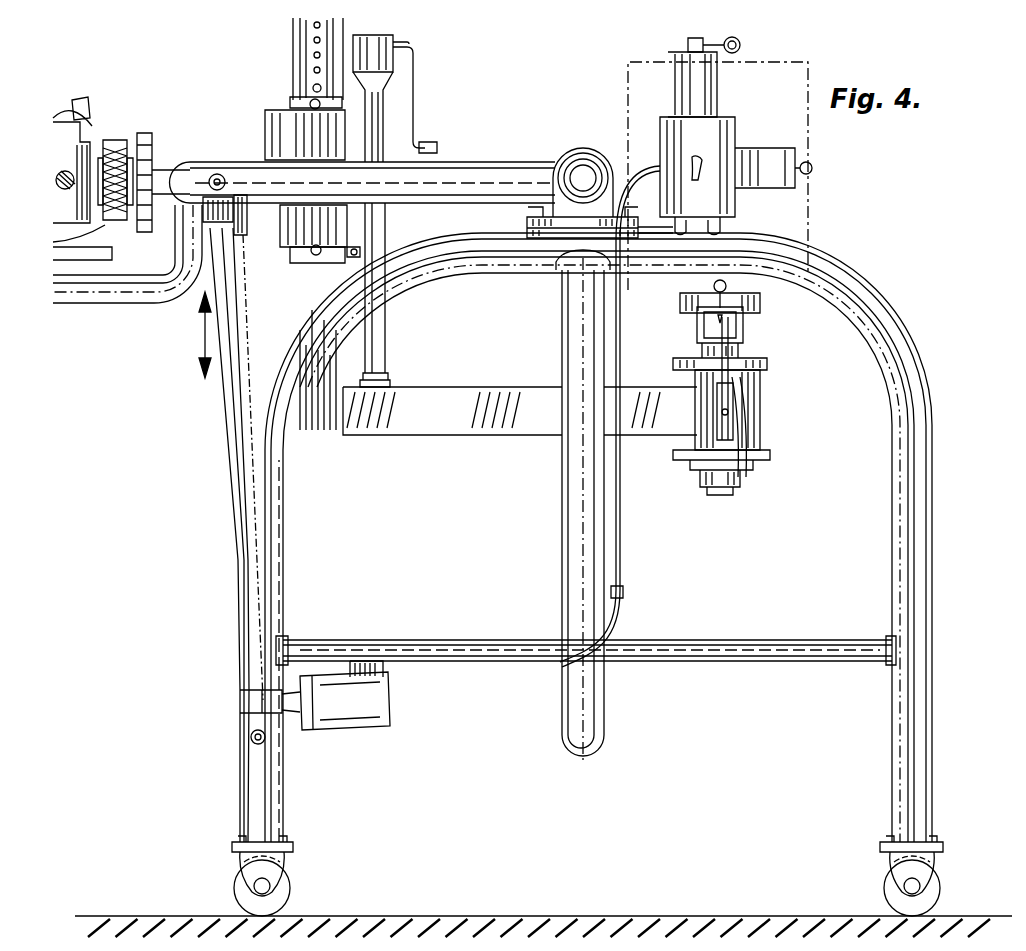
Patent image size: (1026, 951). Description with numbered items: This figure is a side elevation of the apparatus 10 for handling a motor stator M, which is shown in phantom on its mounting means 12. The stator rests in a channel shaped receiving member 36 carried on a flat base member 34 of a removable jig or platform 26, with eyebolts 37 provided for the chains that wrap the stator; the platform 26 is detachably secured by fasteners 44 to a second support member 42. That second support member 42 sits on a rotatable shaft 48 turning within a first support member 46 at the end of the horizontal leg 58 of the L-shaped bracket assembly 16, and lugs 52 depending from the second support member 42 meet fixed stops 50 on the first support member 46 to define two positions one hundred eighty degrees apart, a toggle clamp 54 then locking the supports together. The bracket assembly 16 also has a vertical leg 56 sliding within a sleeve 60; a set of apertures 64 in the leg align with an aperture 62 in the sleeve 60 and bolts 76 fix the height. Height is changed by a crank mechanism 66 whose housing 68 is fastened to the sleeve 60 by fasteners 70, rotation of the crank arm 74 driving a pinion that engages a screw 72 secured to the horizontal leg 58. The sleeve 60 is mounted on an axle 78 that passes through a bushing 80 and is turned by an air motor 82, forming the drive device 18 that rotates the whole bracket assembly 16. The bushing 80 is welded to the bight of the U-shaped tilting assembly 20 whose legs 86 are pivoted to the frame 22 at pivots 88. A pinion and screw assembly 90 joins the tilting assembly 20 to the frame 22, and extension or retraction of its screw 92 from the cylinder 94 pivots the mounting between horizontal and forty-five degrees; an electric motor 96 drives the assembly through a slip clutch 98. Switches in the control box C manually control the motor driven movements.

The apparatus 10 is at (558, 98).
The mounting means 12 is at (729, 387).
The bracket assembly 16 is at (436, 380).
The drive device 18 is at (114, 132).
The tilting assembly 20 is at (495, 150).
The frame 22 is at (284, 530).
The jig or platform 26 is at (666, 320).
The base member 34 is at (746, 325).
The receiving member 36 is at (762, 303).
The eyebolt 37 is at (685, 296).
The second support member 42 is at (700, 345).
The fastener 44 is at (692, 333).
The first support member 46 is at (752, 414).
The rotatable shaft 48 is at (750, 345).
The stop 50 is at (718, 407).
The lug 52 is at (703, 366).
The toggle clamp 54 is at (738, 430).
The vertical leg 56 is at (312, 50).
The horizontal leg 58 is at (456, 412).
The sleeve 60 is at (300, 135).
The aperture 62 is at (300, 295).
The apertures 64 is at (312, 30).
The crank mechanism 66 is at (402, 36).
The housing 68 is at (380, 105).
The fastener 70 is at (360, 250).
The screw 72 is at (382, 374).
The crank arm 74 is at (414, 65).
The bolt 76 is at (310, 104).
The axle 78 is at (256, 218).
The bushing 80 is at (160, 170).
The air motor 82 is at (82, 118).
The leg 86 is at (445, 182).
The pivot 88 is at (587, 172).
The pinion and screw assembly 90 is at (222, 503).
The screw 92 is at (228, 366).
The cylinder 94 is at (232, 545).
The electric motor 96 is at (335, 712).
The slip clutch 98 is at (228, 235).
The motor stator M is at (776, 70).
The control box C is at (736, 142).